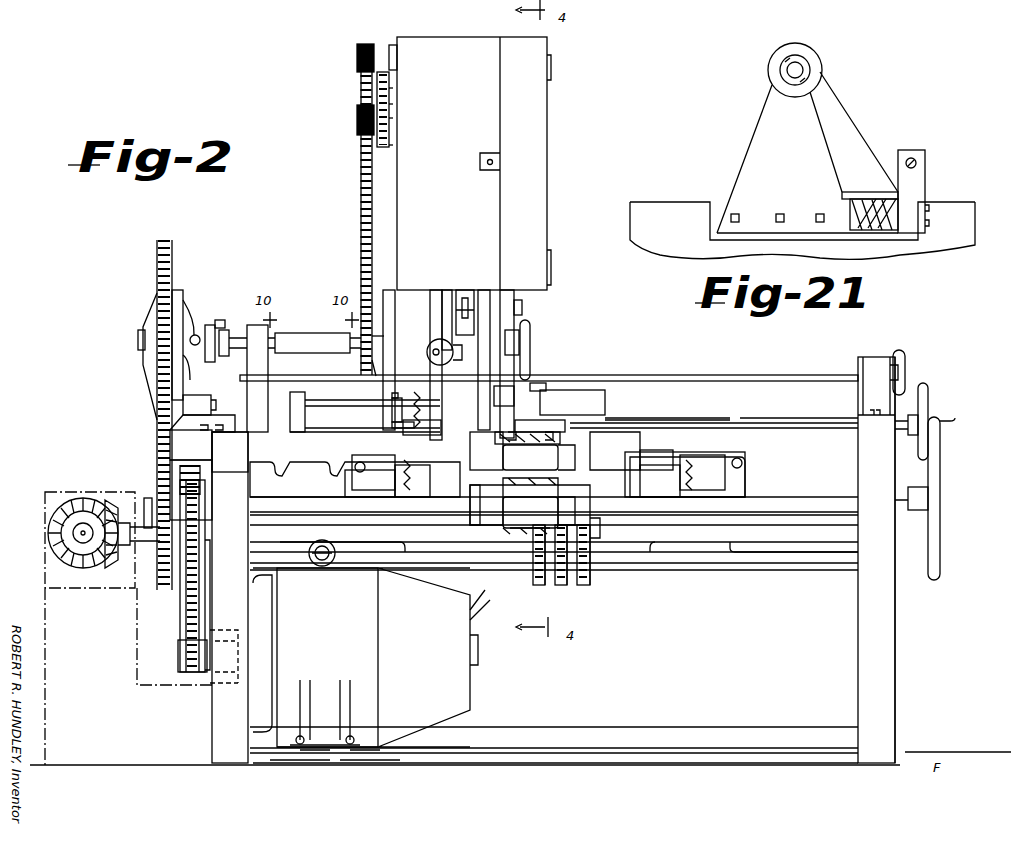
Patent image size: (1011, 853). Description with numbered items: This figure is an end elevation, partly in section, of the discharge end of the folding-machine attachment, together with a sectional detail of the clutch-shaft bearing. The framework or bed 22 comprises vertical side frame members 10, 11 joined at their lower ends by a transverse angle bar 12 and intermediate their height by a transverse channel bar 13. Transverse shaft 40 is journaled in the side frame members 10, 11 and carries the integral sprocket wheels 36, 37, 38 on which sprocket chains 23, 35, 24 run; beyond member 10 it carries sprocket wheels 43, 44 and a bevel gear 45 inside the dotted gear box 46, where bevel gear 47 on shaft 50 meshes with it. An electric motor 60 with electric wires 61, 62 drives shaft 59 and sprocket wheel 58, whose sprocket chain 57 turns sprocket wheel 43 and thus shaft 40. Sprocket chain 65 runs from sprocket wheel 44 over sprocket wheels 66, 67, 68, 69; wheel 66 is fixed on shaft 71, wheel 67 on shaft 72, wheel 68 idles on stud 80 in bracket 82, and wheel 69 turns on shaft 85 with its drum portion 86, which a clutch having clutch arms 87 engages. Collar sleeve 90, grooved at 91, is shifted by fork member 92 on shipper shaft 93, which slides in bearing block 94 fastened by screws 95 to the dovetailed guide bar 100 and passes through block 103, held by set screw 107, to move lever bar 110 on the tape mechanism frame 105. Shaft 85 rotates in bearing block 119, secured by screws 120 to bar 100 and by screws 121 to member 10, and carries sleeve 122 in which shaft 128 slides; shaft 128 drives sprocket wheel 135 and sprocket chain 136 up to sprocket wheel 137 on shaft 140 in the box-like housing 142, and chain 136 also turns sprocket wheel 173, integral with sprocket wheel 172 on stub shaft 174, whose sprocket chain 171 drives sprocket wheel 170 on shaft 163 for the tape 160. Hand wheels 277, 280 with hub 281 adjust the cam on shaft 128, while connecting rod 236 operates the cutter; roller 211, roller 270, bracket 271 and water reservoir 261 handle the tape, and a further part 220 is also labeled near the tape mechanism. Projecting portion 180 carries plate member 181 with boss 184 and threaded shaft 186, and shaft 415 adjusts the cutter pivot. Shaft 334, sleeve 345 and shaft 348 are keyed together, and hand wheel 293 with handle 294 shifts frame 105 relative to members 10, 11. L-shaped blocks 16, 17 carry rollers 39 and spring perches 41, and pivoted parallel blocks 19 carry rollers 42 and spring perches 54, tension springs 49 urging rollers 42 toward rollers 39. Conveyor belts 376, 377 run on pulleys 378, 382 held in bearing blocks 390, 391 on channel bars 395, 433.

In FIG. 2, the side frame member 10 is at (212, 742).
In FIG. 21, the side frame member 10 is at (676, 256).
In FIG. 2, the side frame member 11 is at (858, 663).
In FIG. 2, the transverse angle bar 12 is at (692, 727).
In FIG. 2, the transverse channel bar 13 is at (772, 572).
In FIG. 2, the L-shaped block 16 is at (345, 487).
In FIG. 2, the L-shaped block 17 is at (752, 478).
In FIG. 2, the parallel block 19 is at (740, 458).
In FIG. 2, the framework 22 is at (906, 668).
In FIG. 21, the framework 22 is at (672, 195).
In FIG. 2, the sprocket chain 23 is at (538, 588).
In FIG. 2, the sprocket chain 24 is at (585, 595).
In FIG. 2, the sprocket chain 35 is at (580, 588).
In FIG. 2, the sprocket wheel 36 is at (592, 581).
In FIG. 2, the sprocket wheel 37 is at (555, 567).
In FIG. 2, the sprocket wheel 38 is at (533, 580).
In FIG. 2, the roller 39 is at (635, 510).
In FIG. 2, the shaft 40 is at (735, 543).
In FIG. 2, the spring perch 41 is at (670, 485).
In FIG. 2, the roller 42 is at (647, 460).
In FIG. 2, the sprocket wheel 43 is at (180, 603).
In FIG. 2, the sprocket wheel 44 is at (158, 590).
In FIG. 2, the bevel gear 45 is at (112, 568).
In FIG. 2, the gear box 46 is at (45, 597).
In FIG. 2, the bevel gear 47 is at (70, 512).
In FIG. 2, the tension spring 49 is at (694, 482).
In FIG. 2, the shaft 50 is at (78, 545).
In FIG. 2, the spring perch 54 is at (690, 462).
In FIG. 2, the sprocket chain 57 is at (180, 630).
In FIG. 2, the sprocket wheel 58 is at (180, 660).
In FIG. 2, the shaft 59 is at (228, 634).
In FIG. 2, the electric motor 60 is at (470, 698).
In FIG. 2, the electric wire 61 is at (480, 595).
In FIG. 2, the electric wire 62 is at (480, 620).
In FIG. 2, the sprocket chain 65 is at (165, 240).
In FIG. 2, the sprocket wheel 66 is at (174, 508).
In FIG. 2, the sprocket wheel 67 is at (172, 450).
In FIG. 2, the sprocket wheel 68 is at (202, 423).
In FIG. 2, the sprocket wheel 69 is at (150, 305).
In FIG. 2, the shaft 71 is at (855, 492).
In FIG. 2, the shaft 72 is at (795, 462).
In FIG. 2, the stud 80 is at (211, 405).
In FIG. 2, the bracket 82 is at (244, 440).
In FIG. 2, the shaft 85 is at (138, 340).
In FIG. 21, the shaft 85 is at (800, 62).
In FIG. 2, the drum portion 86 is at (176, 290).
In FIG. 2, the clutch arm 87 is at (192, 388).
In FIG. 2, the collar sleeve 90 is at (233, 337).
In FIG. 2, the groove 91 is at (227, 316).
In FIG. 2, the fork member 92 is at (210, 325).
In FIG. 2, the shipper shaft 93 is at (324, 406).
In FIG. 21, the shipper shaft 93 is at (916, 158).
In FIG. 2, the bearing block 94 is at (296, 392).
In FIG. 21, the bearing block 94 is at (925, 181).
In FIG. 21, the screw 95 is at (929, 222).
In FIG. 2, the dovetailed guide bar 100 is at (332, 428).
In FIG. 21, the dovetailed guide bar 100 is at (873, 233).
In FIG. 2, the block 103 is at (392, 398).
In FIG. 2, the tape mechanism frame 105 is at (424, 304).
In FIG. 2, the set screw 107 is at (395, 396).
In FIG. 2, the lever bar 110 is at (390, 420).
In FIG. 2, the bearing block 119 is at (250, 325).
In FIG. 21, the bearing block 119 is at (822, 62).
In FIG. 21, the screw 120 is at (886, 190).
In FIG. 21, the screw 121 is at (820, 214).
In FIG. 2, the sleeve 122 is at (330, 340).
In FIG. 21, the sleeve 122 is at (785, 55).
In FIG. 2, the shaft 128 is at (350, 356).
In FIG. 2, the sprocket wheel 135 is at (378, 365).
In FIG. 2, the sprocket chain 136 is at (361, 248).
In FIG. 2, the sprocket wheel 137 is at (357, 62).
In FIG. 2, the shaft 140 is at (397, 60).
In FIG. 2, the box-like housing 142 is at (455, 37).
In FIG. 2, the tape 160 is at (530, 302).
In FIG. 2, the shaft 163 is at (393, 90).
In FIG. 2, the sprocket wheel 170 is at (389, 80).
In FIG. 2, the sprocket chain 171 is at (389, 145).
In FIG. 2, the sprocket wheel 172 is at (393, 105).
In FIG. 2, the sprocket wheel 173 is at (357, 125).
In FIG. 2, the stub shaft 174 is at (393, 117).
In FIG. 2, the outwardly projecting portion 180 is at (456, 290).
In FIG. 2, the plate member 181 is at (444, 290).
In FIG. 2, the boss 184 is at (432, 343).
In FIG. 2, the threaded shaft 186 is at (432, 348).
In FIG. 2, the roller 211 is at (528, 420).
In FIG. 2, the block 220 is at (422, 427).
In FIG. 2, the connecting rod 236 is at (508, 396).
In FIG. 2, the water reservoir 261 is at (605, 405).
In FIG. 2, the roller 270 is at (540, 375).
In FIG. 2, the bracket 271 is at (548, 392).
In FIG. 2, the hand wheel 277 is at (518, 290).
In FIG. 2, the hand wheel 280 is at (519, 343).
In FIG. 2, the hub 281 is at (530, 335).
In FIG. 2, the hand wheel 293 is at (932, 395).
In FIG. 2, the handle 294 is at (950, 418).
In FIG. 2, the shaft 334 is at (610, 423).
In FIG. 2, the sleeve 345 is at (710, 423).
In FIG. 2, the shaft 348 is at (755, 423).
In FIG. 2, the endless conveyor belt 376 is at (558, 420).
In FIG. 2, the endless conveyor belt 377 is at (500, 530).
In FIG. 2, the pulley 378 is at (565, 468).
In FIG. 2, the pulley 382 is at (560, 512).
In FIG. 2, the bearing block 390 is at (594, 470).
In FIG. 2, the bearing block 391 is at (476, 511).
In FIG. 2, the channel bar 395 is at (530, 451).
In FIG. 2, the shaft 415 is at (490, 290).
In FIG. 2, the channel bar 433 is at (530, 503).